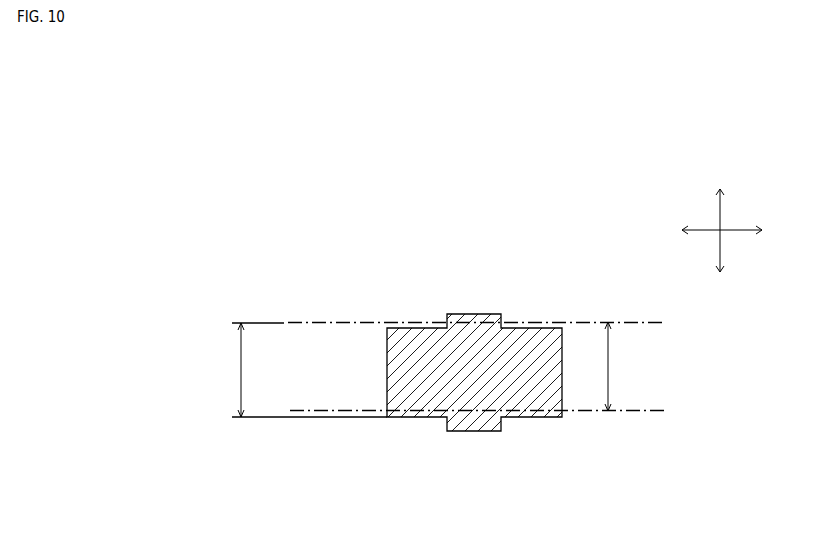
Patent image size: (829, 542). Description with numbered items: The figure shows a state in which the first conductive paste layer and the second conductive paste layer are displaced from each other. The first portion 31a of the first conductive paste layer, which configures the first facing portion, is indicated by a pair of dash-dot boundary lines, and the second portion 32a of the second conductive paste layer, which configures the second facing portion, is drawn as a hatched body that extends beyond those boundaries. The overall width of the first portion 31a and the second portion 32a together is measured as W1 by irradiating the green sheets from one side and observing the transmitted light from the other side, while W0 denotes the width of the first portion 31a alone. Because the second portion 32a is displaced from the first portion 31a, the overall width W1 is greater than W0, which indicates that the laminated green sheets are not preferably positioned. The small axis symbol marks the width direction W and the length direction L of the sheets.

The first portion 31a is at (665, 323).
The second portion 32a is at (519, 418).
The overall width W1 is at (299, 370).
The width of the first portion W0 is at (622, 366).
The width direction axis W is at (720, 209).
The length direction axis L is at (738, 232).